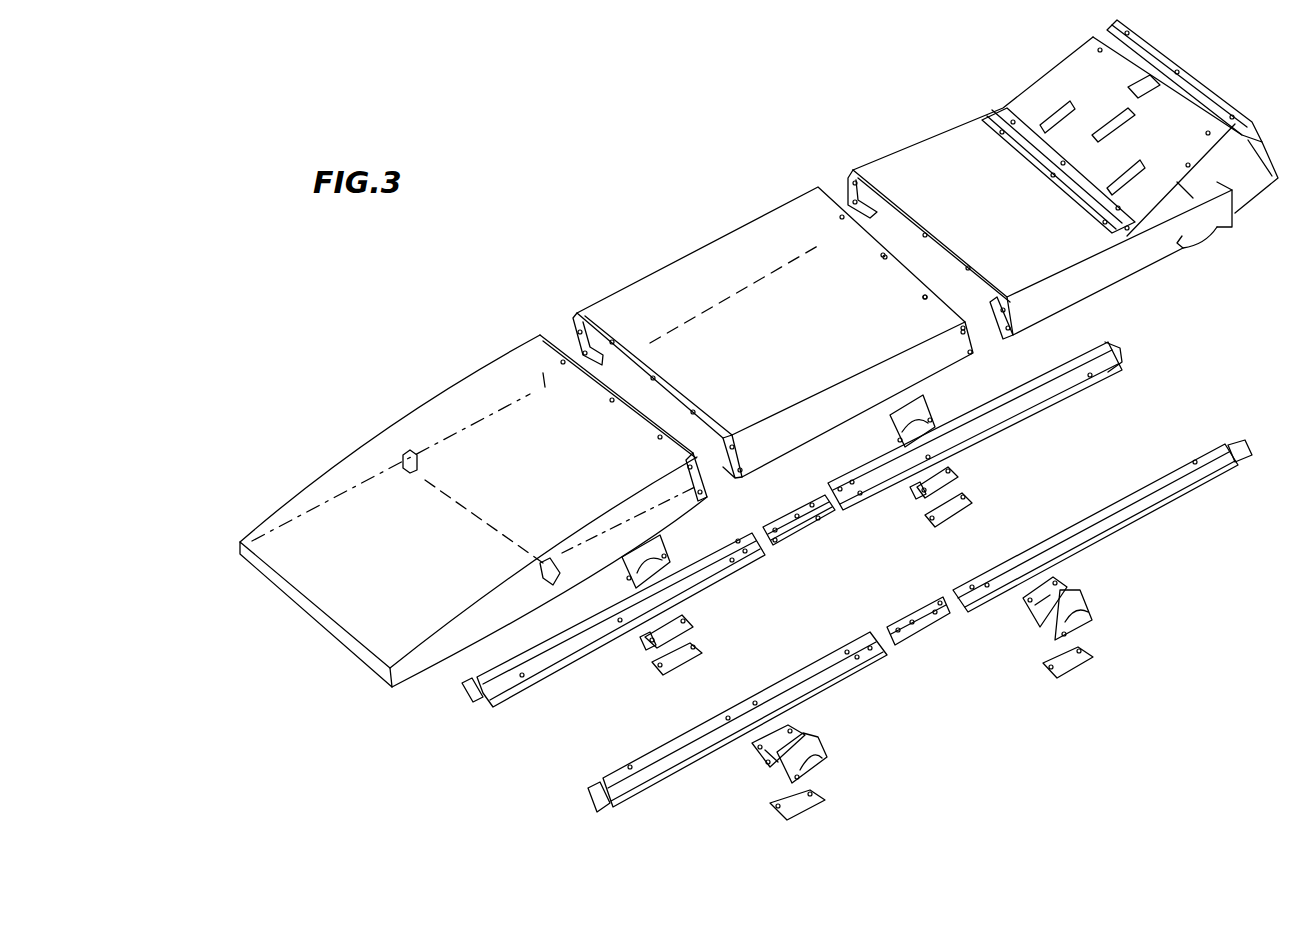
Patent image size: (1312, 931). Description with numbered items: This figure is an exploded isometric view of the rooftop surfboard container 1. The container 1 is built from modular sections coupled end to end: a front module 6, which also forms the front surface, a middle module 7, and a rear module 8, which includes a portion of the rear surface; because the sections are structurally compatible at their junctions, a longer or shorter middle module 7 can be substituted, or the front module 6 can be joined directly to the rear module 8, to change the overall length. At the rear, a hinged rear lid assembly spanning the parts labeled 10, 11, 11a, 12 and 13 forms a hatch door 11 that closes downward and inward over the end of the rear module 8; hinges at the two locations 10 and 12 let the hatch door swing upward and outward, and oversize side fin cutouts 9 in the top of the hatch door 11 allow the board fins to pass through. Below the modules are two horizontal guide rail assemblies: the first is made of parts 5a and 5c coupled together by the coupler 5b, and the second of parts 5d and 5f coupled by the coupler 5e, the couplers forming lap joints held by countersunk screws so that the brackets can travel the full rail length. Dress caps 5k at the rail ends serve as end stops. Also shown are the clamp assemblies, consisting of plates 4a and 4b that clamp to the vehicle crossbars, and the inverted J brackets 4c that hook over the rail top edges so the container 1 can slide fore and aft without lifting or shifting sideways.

The container 1 is at (539, 248).
The clamp assembly plate 4a is at (660, 672).
The clamp assembly plate 4b is at (640, 642).
The inverted J bracket 4c is at (665, 550).
The horizontal guide rail part 5a is at (672, 770).
The guide rail coupler 5b is at (925, 628).
The horizontal guide rail part 5c is at (1170, 493).
The horizontal guide rail part 5d is at (540, 670).
The guide rail coupler 5e is at (815, 525).
The horizontal guide rail part 5f is at (1045, 407).
The dress cap 5k is at (468, 698).
The front module 6 is at (418, 417).
The middle module 7 is at (722, 226).
The rear module 8 is at (950, 138).
The side fin cutout 9 is at (1103, 120).
The hinge location 10 is at (1005, 113).
The rear hatch door 11 is at (1080, 60).
The panel bracket 11a is at (1170, 100).
The hinge location 12 is at (1168, 52).
The rear lid assembly component 13 is at (1245, 210).